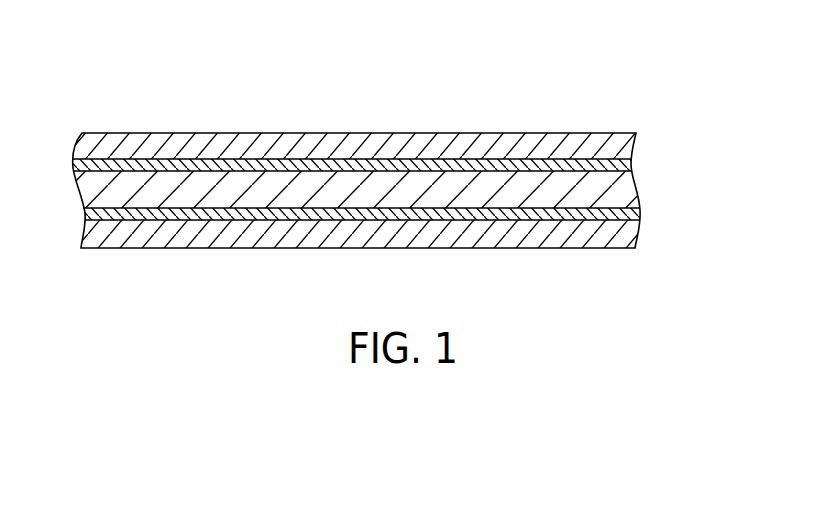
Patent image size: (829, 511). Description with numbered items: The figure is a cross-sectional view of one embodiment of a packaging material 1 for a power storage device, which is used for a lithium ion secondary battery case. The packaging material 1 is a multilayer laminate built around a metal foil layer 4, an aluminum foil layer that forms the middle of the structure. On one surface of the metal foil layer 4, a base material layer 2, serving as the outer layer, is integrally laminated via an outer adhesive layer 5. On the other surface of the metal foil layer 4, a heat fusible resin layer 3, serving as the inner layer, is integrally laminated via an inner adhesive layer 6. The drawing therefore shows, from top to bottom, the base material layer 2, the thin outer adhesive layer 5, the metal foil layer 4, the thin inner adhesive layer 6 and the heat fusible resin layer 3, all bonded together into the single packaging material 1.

The packaging material for a power storage device 1 is at (572, 97).
The base material layer 2 is at (615, 140).
The heat fusible resin layer 3 is at (622, 242).
The metal foil layer 4 is at (625, 194).
The outer adhesive layer 5 is at (628, 167).
The inner adhesive layer 6 is at (635, 216).